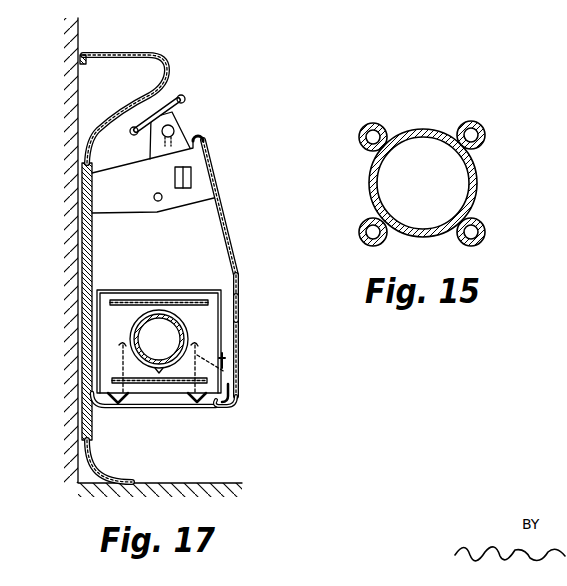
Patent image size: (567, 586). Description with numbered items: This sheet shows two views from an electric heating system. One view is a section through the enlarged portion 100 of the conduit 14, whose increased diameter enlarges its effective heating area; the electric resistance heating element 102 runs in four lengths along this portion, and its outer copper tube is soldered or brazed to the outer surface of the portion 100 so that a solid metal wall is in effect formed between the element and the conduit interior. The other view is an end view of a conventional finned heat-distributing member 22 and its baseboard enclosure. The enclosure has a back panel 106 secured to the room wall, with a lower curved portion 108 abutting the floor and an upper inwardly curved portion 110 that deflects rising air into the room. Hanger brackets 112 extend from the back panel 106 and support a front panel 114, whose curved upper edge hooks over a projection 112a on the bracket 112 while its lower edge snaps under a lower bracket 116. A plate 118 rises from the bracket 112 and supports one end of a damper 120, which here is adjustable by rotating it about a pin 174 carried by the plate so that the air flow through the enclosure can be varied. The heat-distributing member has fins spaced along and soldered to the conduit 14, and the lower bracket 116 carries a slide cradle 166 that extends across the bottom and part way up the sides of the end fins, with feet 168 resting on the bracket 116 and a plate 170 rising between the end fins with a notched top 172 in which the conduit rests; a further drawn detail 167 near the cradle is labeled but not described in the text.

In FIG. 17, the conduit 14 is at (178, 323).
In FIG. 17, the finned heat-distributing member 22 is at (239, 309).
In FIG. 15, the portion of the conduit 100 is at (478, 186).
In FIG. 15, the electric resistance heating element 102 is at (465, 123).
In FIG. 17, the back panel 106 is at (85, 208).
In FIG. 17, the lower curved portion 108 is at (106, 470).
In FIG. 17, the upper inwardly curved portion 110 is at (163, 65).
In FIG. 17, the hanger bracket 112 is at (210, 183).
In FIG. 17, the projection 112a is at (206, 139).
In FIG. 17, the front panel 114 is at (238, 266).
In FIG. 17, the lower bracket 116 is at (192, 404).
In FIG. 17, the plate 118 is at (151, 148).
In FIG. 17, the damper 120 is at (182, 96).
In FIG. 17, the slide cradle 166 is at (144, 292).
In FIG. 17, the clip 167 is at (228, 359).
In FIG. 17, the feet 168 is at (129, 399).
In FIG. 17, the plate 170 is at (238, 383).
In FIG. 17, the notched top 172 is at (120, 351).
In FIG. 17, the pivot pin 174 is at (174, 129).